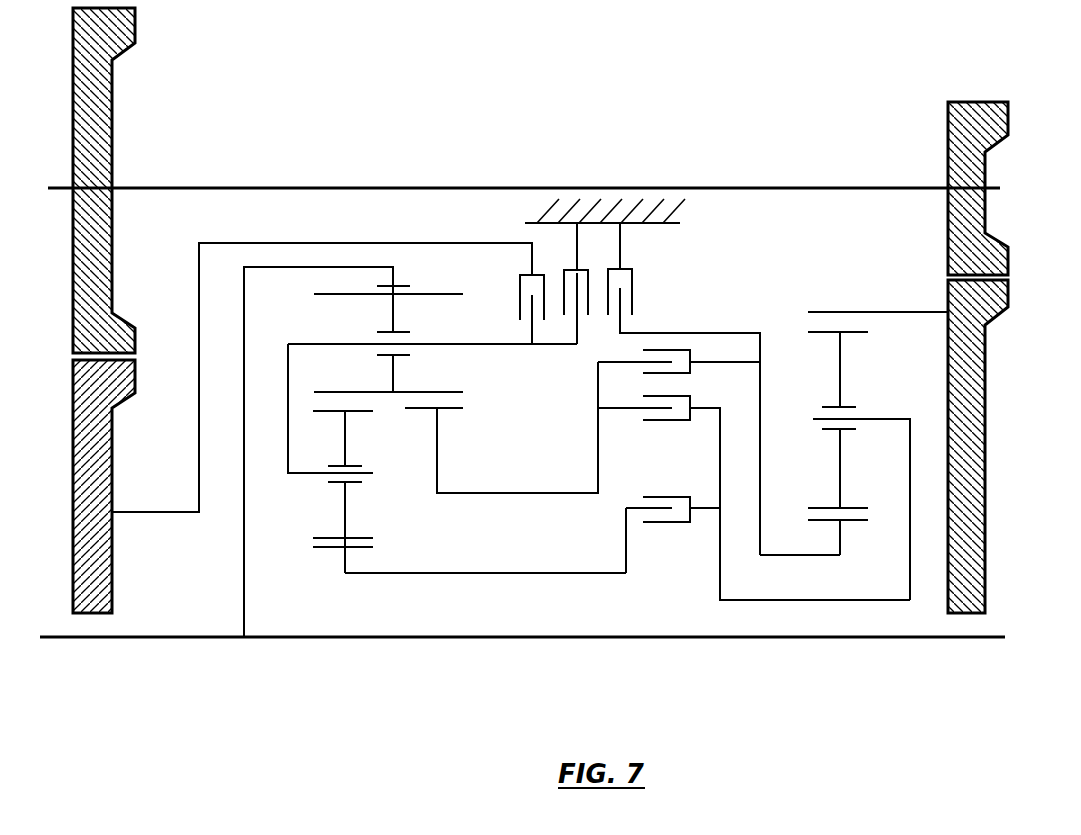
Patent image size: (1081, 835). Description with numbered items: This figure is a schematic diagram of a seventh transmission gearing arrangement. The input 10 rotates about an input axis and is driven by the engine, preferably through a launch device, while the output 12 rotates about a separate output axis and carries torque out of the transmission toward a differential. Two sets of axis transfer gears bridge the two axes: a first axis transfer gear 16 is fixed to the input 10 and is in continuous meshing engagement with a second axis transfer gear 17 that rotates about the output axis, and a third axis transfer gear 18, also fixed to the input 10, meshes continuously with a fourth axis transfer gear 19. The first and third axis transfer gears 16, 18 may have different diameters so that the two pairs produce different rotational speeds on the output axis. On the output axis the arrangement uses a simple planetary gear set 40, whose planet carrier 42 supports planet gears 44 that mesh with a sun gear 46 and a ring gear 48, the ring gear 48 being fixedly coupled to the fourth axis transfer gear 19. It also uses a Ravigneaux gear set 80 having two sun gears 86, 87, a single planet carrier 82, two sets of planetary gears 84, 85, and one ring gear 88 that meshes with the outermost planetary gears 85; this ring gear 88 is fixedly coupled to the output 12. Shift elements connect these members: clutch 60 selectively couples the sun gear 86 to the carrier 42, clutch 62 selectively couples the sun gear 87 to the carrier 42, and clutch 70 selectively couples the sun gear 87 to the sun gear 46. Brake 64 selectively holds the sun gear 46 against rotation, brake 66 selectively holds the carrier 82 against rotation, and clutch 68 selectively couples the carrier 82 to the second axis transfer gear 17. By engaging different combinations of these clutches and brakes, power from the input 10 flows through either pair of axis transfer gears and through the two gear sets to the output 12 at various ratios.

The input 10 is at (262, 186).
The output 12 is at (620, 637).
The first axis transfer gear 16 is at (112, 100).
The second axis transfer gear 17 is at (112, 592).
The third axis transfer gear 18 is at (985, 212).
The fourth axis transfer gear 19 is at (985, 422).
The planetary gear set 40 is at (838, 688).
The planet carrier 42 is at (882, 417).
The planet gears 44 is at (838, 368).
The sun gear 46 is at (840, 555).
The ring gear 48 is at (878, 312).
The clutch 60 is at (673, 535).
The clutch 62 is at (754, 498).
The brake 64 is at (684, 389).
The brake 66 is at (445, 283).
The clutch 68 is at (328, 377).
The clutch 70 is at (679, 369).
The Ravigneaux gear set 80 is at (349, 688).
The planet carrier 82 is at (288, 473).
The planetary gears 84 is at (345, 438).
The planetary gears 85 is at (393, 310).
The sun gear 86 is at (345, 573).
The sun gear 87 is at (437, 495).
The ring gear 88 is at (265, 268).